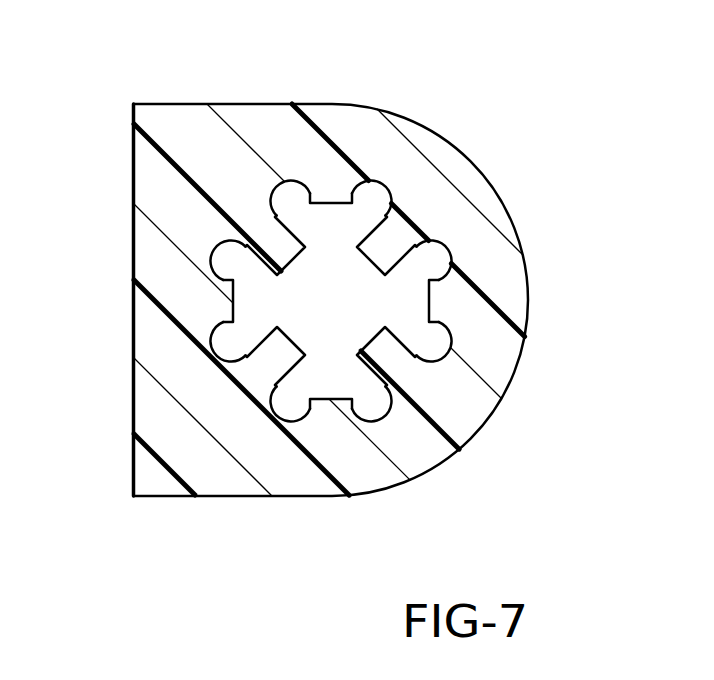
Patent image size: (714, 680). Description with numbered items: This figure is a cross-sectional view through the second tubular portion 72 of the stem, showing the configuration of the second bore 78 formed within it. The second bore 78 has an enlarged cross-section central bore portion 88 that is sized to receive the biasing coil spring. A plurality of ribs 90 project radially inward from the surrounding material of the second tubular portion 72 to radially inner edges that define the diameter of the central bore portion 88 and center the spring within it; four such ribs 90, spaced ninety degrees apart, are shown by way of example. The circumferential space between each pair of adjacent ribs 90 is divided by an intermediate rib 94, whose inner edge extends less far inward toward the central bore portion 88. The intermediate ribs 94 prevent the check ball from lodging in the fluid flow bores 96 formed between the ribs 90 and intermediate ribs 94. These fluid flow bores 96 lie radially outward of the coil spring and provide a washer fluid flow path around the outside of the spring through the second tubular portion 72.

The second tubular portion 72 is at (150, 352).
The second bore 78 is at (286, 406).
The central bore portion 88 is at (309, 275).
The ribs 90 is at (273, 243).
The intermediate ribs 94 is at (320, 192).
The fluid flow bores 96 is at (232, 258).